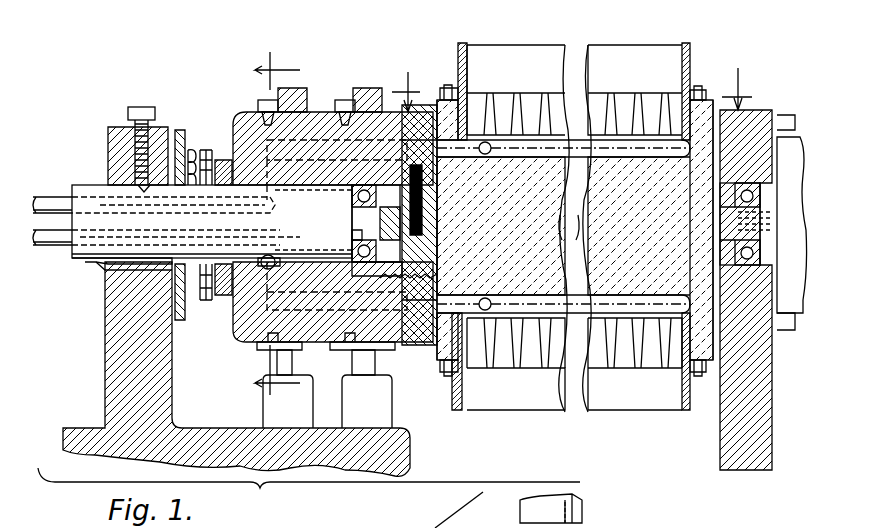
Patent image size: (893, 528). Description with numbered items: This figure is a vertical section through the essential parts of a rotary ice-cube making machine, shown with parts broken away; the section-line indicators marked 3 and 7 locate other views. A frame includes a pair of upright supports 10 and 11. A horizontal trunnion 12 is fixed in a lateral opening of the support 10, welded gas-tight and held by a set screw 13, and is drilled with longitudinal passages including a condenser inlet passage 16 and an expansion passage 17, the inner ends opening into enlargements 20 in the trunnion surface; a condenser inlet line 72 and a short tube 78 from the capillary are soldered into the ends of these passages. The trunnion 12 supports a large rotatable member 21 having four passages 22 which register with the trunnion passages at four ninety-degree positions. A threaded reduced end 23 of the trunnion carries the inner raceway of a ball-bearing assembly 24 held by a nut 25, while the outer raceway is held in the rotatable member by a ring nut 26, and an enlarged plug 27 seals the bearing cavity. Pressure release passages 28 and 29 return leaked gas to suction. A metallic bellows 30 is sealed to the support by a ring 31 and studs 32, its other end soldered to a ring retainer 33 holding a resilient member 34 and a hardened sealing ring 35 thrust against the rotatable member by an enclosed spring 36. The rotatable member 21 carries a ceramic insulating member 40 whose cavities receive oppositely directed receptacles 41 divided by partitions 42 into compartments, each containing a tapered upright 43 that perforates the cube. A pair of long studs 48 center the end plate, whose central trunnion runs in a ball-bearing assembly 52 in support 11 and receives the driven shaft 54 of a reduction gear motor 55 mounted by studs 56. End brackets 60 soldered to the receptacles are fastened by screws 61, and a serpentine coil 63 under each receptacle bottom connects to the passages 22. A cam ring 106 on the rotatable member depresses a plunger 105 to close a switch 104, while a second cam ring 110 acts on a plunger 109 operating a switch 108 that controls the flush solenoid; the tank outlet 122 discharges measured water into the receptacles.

The upright support 10 is at (112, 325).
The upright support 11 is at (765, 382).
The horizontal trunnion 12 is at (88, 266).
The set screw 13 is at (140, 106).
The condenser inlet passage 16 is at (130, 236).
The expansion passage 17 is at (193, 212).
The enlargements 20 is at (275, 256).
The rotatable member 21 is at (318, 110).
The passages 22 is at (315, 155).
The threaded reduced end 23 is at (352, 236).
The ball-bearing assembly 24 is at (352, 206).
The nut 25 is at (380, 222).
The ring nut 26 is at (370, 272).
The plug 27 is at (396, 280).
The pressure release passage 28 is at (305, 192).
The pressure release passage 29 is at (185, 193).
The metallic bellows 30 is at (204, 301).
The ring 31 is at (182, 322).
The studs 32 is at (183, 128).
The ring retainer 33 is at (224, 297).
The resilient member 34 is at (196, 148).
The sealing ring 35 is at (224, 158).
The spring 36 is at (206, 186).
The insulating member 40 is at (578, 195).
The receptacles 41 is at (640, 55).
The partitions 42 is at (665, 100).
The tapered upright 43 is at (545, 100).
The long studs 48 is at (569, 240).
The ball-bearing assembly 52 is at (745, 182).
The driven shaft 54 is at (772, 220).
The reduction gear motor 55 is at (796, 136).
The studs 56 is at (790, 330).
The end brackets 60 is at (458, 52).
The screws 61 is at (443, 86).
The serpentine coil 63 is at (640, 158).
The condenser inlet line 72 is at (42, 250).
The short tube 78 is at (40, 196).
The switch 104 is at (385, 410).
The plunger 105 is at (375, 366).
The cam ring 106 is at (375, 348).
The switch 108 is at (262, 403).
The plunger 109 is at (277, 368).
The second cam ring 110 is at (258, 350).
The outlet 122 is at (585, 515).
The section line 3 is at (278, 226).
The section line 7 is at (572, 78).